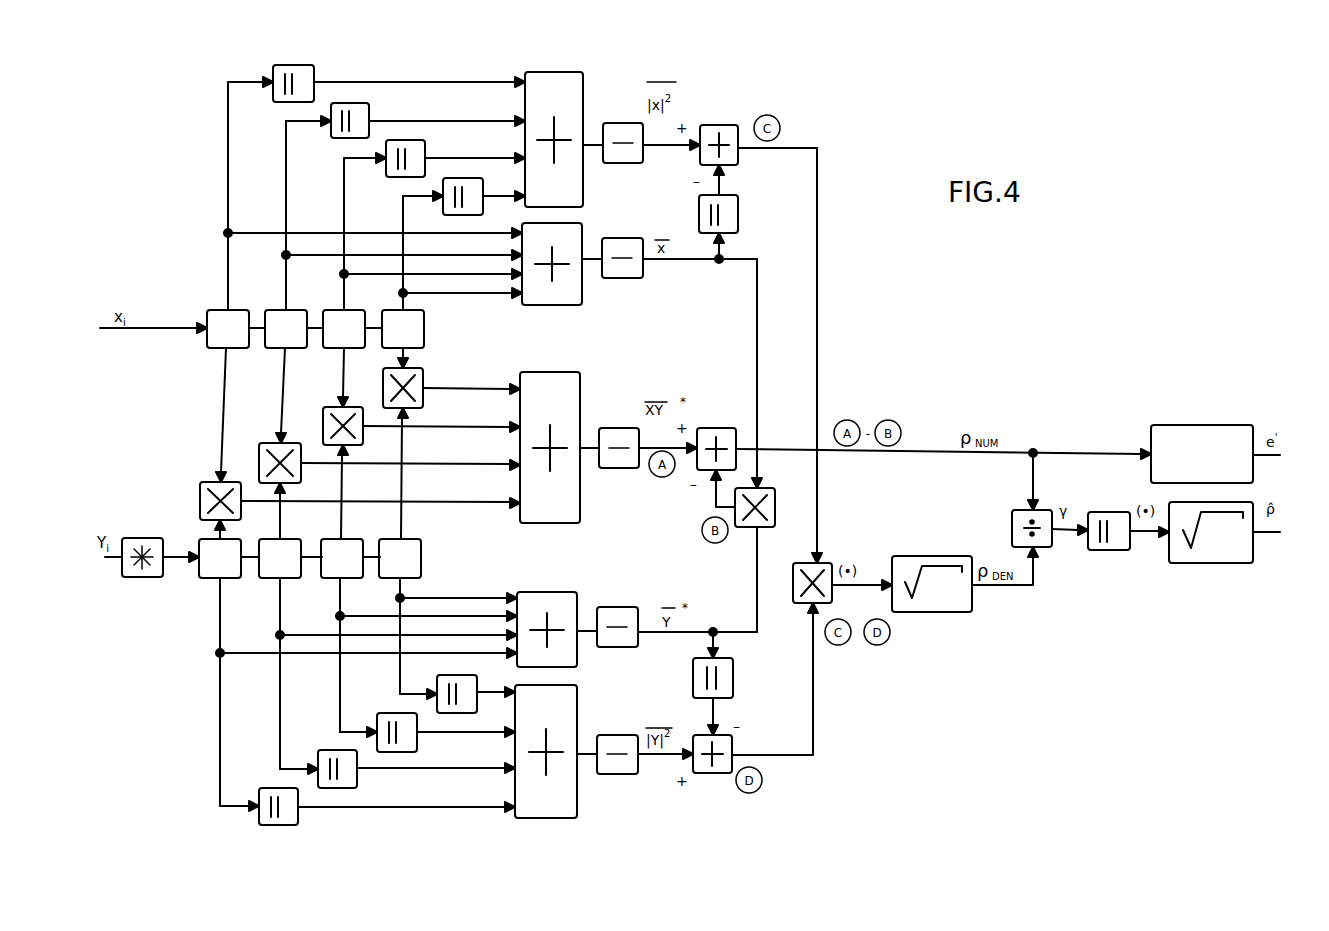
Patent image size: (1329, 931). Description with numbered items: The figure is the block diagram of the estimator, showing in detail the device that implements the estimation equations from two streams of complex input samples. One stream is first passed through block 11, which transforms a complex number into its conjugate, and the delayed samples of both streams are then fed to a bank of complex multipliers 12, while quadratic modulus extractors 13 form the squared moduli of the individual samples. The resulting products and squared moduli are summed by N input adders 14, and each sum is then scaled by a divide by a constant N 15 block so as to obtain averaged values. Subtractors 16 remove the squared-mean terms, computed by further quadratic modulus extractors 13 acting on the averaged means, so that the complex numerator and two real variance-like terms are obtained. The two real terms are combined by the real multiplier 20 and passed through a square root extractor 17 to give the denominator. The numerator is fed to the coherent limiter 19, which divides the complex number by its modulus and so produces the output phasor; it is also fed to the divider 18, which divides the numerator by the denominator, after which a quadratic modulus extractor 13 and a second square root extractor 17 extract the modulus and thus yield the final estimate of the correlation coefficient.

The conjugate block 11 is at (142, 539).
The complex multiplier 12 is at (501, 437).
The quadratic modulus extractor 13 is at (689, 445).
The N input adder 14 is at (566, 451).
The divide by a constant N 15 is at (636, 464).
The subtractor 16 is at (730, 427).
The square root extractor 17 is at (1072, 570).
The divider 18 is at (1011, 511).
The coherent limiter 19 is at (1202, 431).
The real multiplier 20 is at (821, 559).